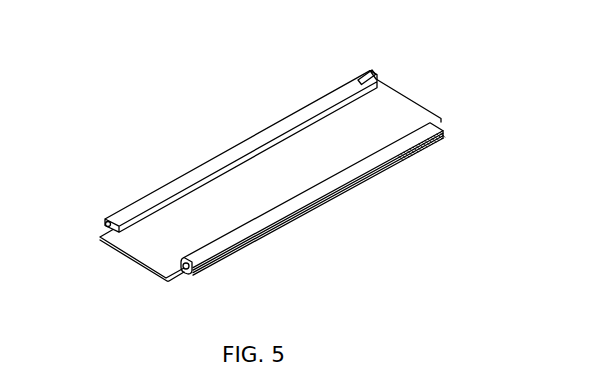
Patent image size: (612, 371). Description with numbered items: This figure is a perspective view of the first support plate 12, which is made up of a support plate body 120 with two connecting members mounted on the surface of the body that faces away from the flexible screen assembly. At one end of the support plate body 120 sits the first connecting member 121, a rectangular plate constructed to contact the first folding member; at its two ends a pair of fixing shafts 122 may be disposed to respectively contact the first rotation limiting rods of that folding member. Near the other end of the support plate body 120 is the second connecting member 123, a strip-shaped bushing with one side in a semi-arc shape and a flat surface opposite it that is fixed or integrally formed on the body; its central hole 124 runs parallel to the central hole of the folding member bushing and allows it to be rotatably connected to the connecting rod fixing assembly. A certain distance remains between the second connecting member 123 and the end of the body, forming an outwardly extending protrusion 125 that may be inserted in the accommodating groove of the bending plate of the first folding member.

The first support plate 12 is at (172, 178).
The support plate body 120 is at (407, 97).
The first connecting member 121 is at (343, 84).
The fixing shafts 122 is at (104, 223).
The second connecting member 123 is at (210, 249).
The central hole 124 is at (185, 272).
The protrusion 125 is at (252, 244).